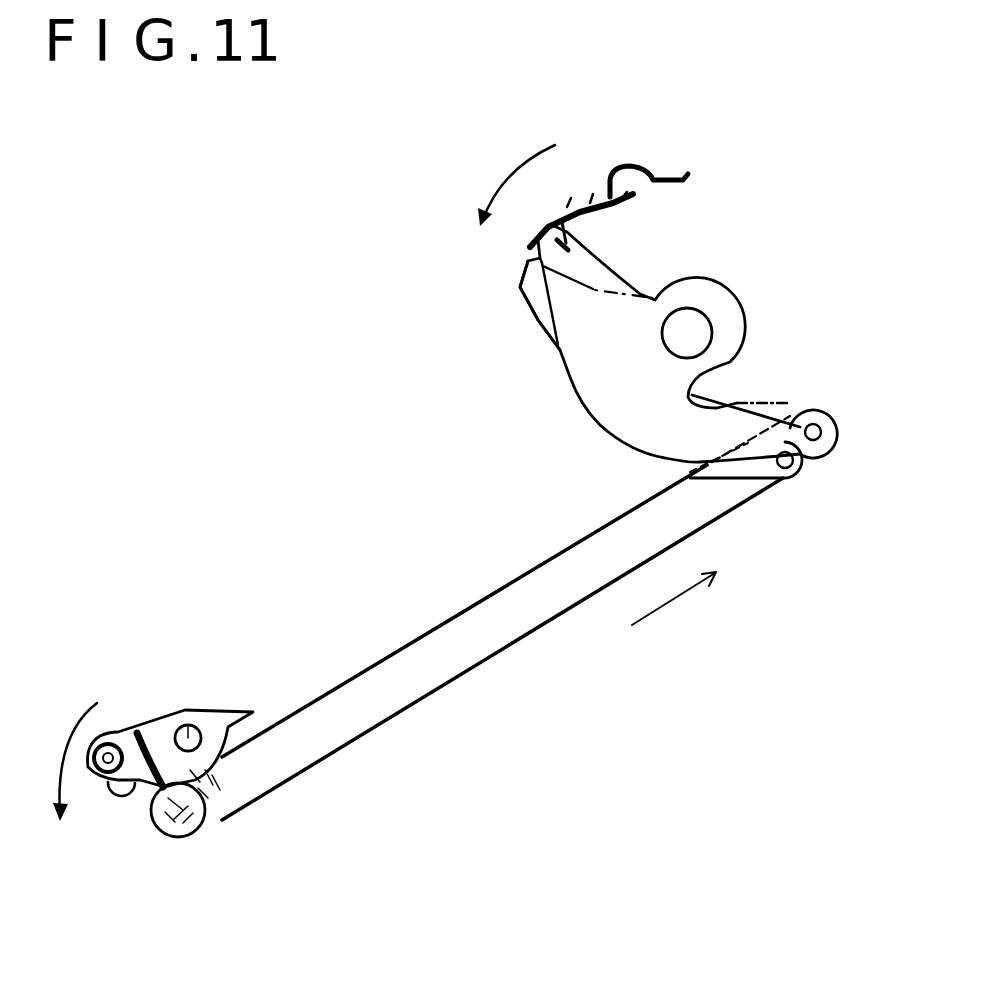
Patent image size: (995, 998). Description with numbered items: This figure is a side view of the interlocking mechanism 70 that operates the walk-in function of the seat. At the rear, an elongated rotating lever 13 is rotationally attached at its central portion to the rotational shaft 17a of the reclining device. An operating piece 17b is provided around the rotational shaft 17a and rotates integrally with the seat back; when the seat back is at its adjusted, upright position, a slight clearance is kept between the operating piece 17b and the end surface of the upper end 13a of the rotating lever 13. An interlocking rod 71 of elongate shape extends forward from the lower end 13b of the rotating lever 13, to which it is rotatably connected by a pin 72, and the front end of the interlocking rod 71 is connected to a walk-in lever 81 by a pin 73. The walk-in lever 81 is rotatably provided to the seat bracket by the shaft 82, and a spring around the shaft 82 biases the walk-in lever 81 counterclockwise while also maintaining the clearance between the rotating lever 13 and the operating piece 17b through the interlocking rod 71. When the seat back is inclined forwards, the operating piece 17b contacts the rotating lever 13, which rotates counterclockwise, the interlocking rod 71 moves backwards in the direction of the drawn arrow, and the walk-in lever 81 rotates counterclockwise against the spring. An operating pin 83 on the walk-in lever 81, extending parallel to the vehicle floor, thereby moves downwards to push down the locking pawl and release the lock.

The rotating lever 13 is at (590, 383).
The upper end of the rotating lever 13a is at (492, 296).
The lower end of the rotating lever 13b is at (802, 405).
The rotational shaft 17a is at (697, 310).
The operating piece 17b is at (609, 170).
The interlocking mechanism 70 is at (325, 538).
The interlocking rod 71 is at (453, 633).
The pin 72 is at (797, 490).
The pin 73 is at (156, 838).
The walk-in lever 81 is at (170, 717).
The shaft 82 is at (191, 725).
The operating pin 83 is at (118, 732).